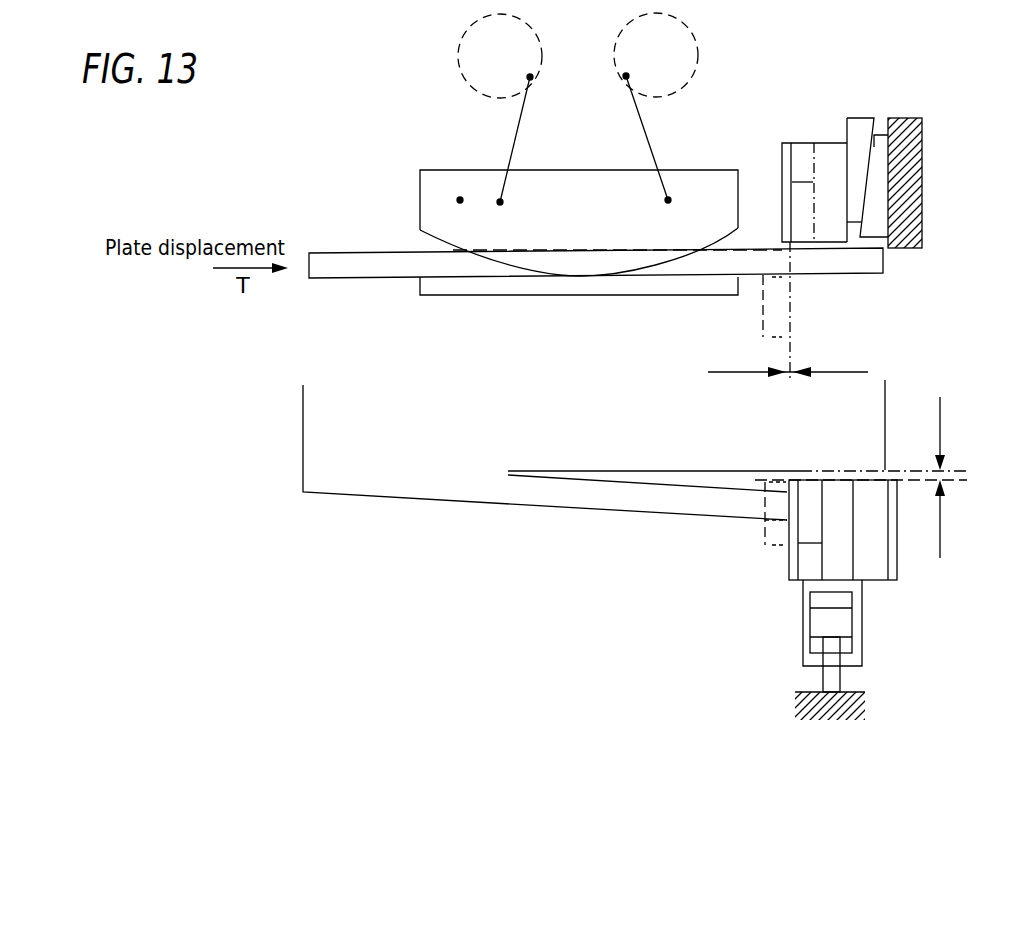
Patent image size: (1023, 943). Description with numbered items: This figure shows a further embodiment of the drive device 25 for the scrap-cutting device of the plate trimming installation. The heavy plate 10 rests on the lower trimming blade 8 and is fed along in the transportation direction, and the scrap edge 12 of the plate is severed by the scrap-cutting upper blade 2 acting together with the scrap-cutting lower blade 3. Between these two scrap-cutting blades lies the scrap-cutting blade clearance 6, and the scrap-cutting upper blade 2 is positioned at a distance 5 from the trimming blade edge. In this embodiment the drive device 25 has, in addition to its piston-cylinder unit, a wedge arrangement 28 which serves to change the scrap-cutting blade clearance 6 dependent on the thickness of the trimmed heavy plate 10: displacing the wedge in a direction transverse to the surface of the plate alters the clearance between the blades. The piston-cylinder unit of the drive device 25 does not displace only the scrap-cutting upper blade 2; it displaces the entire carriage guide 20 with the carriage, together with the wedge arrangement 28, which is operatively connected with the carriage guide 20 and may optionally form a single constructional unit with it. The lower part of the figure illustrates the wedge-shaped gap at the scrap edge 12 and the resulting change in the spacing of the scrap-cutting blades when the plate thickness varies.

The scrap-cutting upper blade 2 is at (803, 187).
The scrap-cutting lower blade 3 is at (763, 316).
The distance between the scrap-cutting upper blade and the trimming blade edge 5 is at (967, 478).
The scrap-cutting blade clearance 6 is at (460, 200).
The lower trimming blade 8 is at (508, 297).
The heavy plate 10 is at (338, 260).
The scrap edge 12 is at (676, 502).
The carriage guide 20 is at (830, 153).
The drive device 25 is at (887, 135).
The wedge arrangement 28 is at (880, 133).